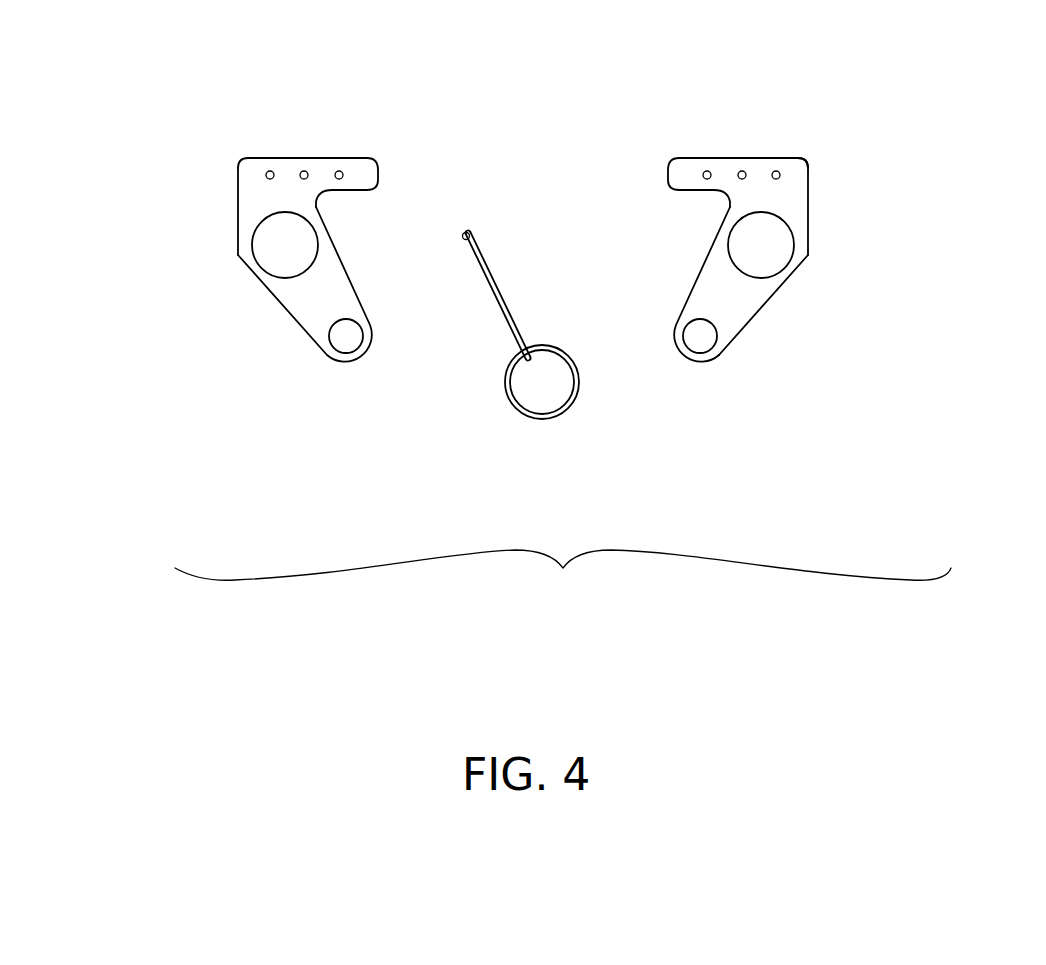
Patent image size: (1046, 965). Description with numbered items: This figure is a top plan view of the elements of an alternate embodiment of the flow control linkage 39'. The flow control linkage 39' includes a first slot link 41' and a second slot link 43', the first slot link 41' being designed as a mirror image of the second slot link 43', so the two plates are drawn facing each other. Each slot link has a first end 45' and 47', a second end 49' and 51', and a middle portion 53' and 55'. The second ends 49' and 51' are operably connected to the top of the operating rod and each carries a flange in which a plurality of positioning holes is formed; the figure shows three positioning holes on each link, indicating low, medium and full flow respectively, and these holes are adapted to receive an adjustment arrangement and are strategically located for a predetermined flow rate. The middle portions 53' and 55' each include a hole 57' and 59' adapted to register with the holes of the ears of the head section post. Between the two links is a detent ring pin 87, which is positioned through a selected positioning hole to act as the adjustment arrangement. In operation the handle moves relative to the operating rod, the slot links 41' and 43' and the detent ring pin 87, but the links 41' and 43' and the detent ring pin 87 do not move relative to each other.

The flow control linkage 39' is at (563, 327).
The first slot link 41' is at (249, 327).
The second slot link 43' is at (714, 285).
The first end 45' is at (310, 402).
The first end 47' is at (745, 360).
The second end 49' is at (271, 269).
The second end 51' is at (837, 124).
The middle portion 53' is at (180, 250).
The middle portion 55' is at (866, 214).
The hole 57' is at (178, 245).
The hole 59' is at (829, 213).
The detent ring pin 87 is at (502, 288).